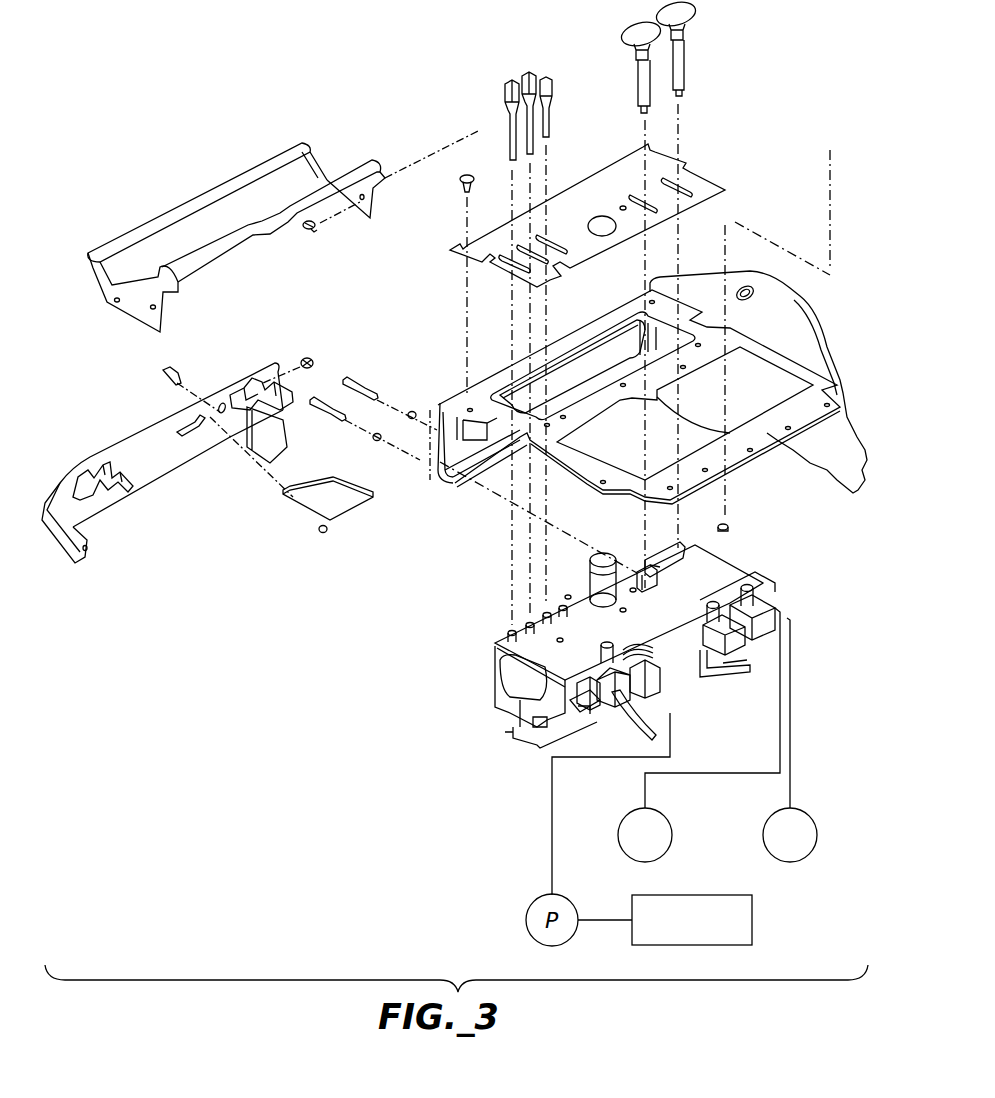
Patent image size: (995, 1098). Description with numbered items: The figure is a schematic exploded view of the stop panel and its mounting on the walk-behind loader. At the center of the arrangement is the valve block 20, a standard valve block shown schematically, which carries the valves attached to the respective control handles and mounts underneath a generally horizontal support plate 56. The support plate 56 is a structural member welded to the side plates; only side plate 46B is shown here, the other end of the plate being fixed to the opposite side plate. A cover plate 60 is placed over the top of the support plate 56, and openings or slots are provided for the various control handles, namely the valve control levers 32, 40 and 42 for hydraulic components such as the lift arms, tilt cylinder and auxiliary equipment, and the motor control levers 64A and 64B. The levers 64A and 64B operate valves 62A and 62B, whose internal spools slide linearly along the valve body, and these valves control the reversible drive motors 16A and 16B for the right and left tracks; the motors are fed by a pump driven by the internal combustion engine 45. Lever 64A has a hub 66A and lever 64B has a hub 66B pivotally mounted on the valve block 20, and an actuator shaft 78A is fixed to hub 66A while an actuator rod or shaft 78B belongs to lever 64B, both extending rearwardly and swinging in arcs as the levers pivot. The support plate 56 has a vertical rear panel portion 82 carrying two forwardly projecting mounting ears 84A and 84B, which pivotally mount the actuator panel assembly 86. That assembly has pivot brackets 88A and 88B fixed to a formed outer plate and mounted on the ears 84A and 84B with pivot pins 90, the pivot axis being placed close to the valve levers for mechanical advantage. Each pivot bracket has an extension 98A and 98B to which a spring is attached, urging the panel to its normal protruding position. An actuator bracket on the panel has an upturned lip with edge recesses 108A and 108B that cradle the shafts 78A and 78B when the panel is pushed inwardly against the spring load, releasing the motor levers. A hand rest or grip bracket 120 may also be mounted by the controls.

The hand rest or grip bracket 120 is at (250, 175).
The valve control lever 32 is at (500, 72).
The valve control lever 40 is at (521, 78).
The valve control lever 42 is at (546, 76).
The control lever 64A is at (635, 82).
The control lever 64B is at (697, 62).
The cover plate 60 is at (706, 186).
The support plate 56 is at (762, 437).
The side plate 46B is at (806, 325).
The vertical rear panel portion 82 is at (437, 447).
The mounting ear 84A is at (450, 483).
The mounting ear 84B is at (642, 318).
The actuator panel assembly 86 is at (153, 443).
The pivot bracket 88A is at (113, 492).
The pivot bracket 88B is at (237, 385).
The pivot pins 90 is at (190, 415).
The extension 98A is at (120, 470).
The extension 98B is at (283, 372).
The actuator shaft 78A is at (332, 418).
The actuator rod or shaft 78B is at (362, 380).
The edge recess 108A is at (327, 532).
The edge recess 108B is at (373, 497).
The valve block 20 is at (493, 672).
The hub 66A is at (640, 580).
The hub 66B is at (677, 552).
The valve 62A is at (747, 637).
The valve 62B is at (765, 593).
The drive hydraulic motor 16A is at (662, 848).
The drive hydraulic motor 16B is at (797, 850).
The internal combustion engine 45 is at (640, 935).